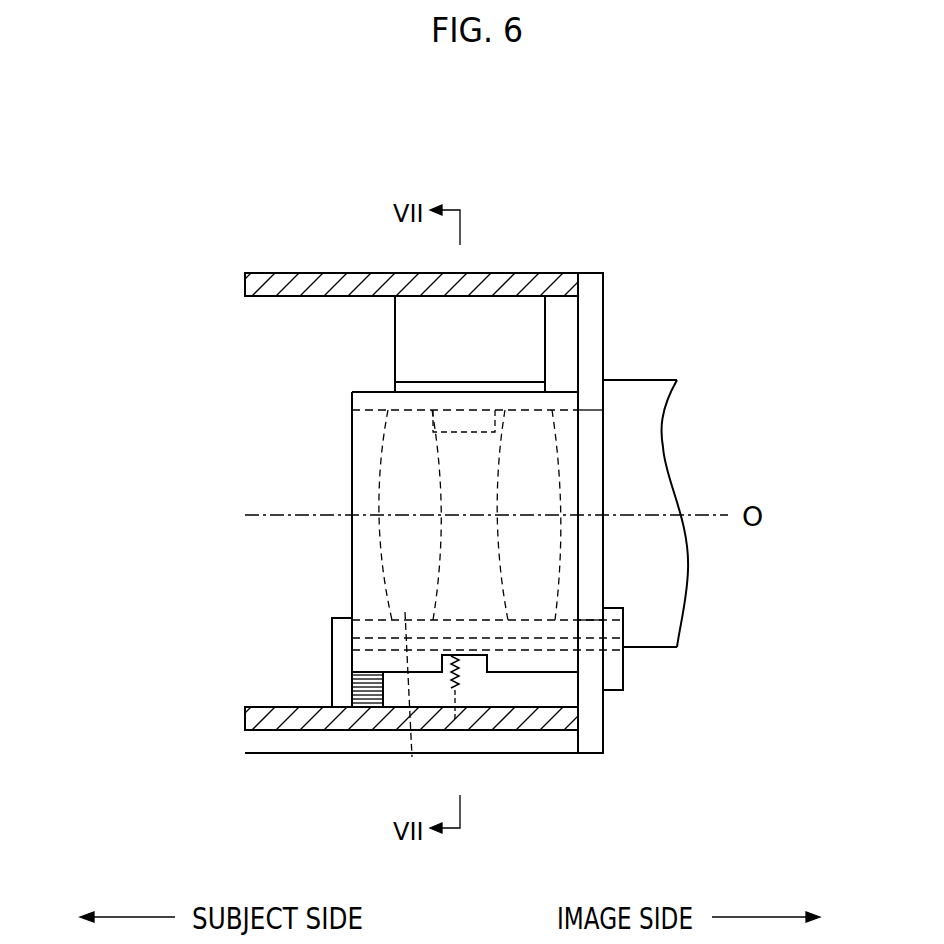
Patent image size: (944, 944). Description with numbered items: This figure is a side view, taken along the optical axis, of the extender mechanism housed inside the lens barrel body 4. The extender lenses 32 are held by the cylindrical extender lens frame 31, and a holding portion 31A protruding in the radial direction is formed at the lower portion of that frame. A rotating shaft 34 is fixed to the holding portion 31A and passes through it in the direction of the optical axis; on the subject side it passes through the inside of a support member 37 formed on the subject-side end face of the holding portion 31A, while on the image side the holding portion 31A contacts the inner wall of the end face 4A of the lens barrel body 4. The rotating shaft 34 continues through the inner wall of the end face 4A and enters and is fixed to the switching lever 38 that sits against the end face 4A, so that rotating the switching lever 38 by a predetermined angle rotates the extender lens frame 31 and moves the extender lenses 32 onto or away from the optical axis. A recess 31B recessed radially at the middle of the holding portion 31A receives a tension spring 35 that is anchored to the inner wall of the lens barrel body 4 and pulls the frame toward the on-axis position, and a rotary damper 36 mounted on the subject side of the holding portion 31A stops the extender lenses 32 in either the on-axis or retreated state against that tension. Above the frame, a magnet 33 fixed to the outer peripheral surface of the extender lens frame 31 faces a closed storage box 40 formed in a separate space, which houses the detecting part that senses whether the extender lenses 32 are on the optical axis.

The lens barrel body 4 is at (507, 236).
The end face 4A is at (603, 296).
The storage box 40 is at (415, 330).
The extender lens frame 31 is at (352, 393).
The holding portion 31A is at (372, 622).
The recess 31B is at (473, 658).
The extender lenses 32 is at (522, 452).
The magnet 33 is at (458, 406).
The rotating shaft 34 is at (417, 704).
The tension spring 35 is at (458, 692).
The rotary damper 36 is at (367, 693).
The support member 37 is at (342, 665).
The switching lever 38 is at (613, 677).